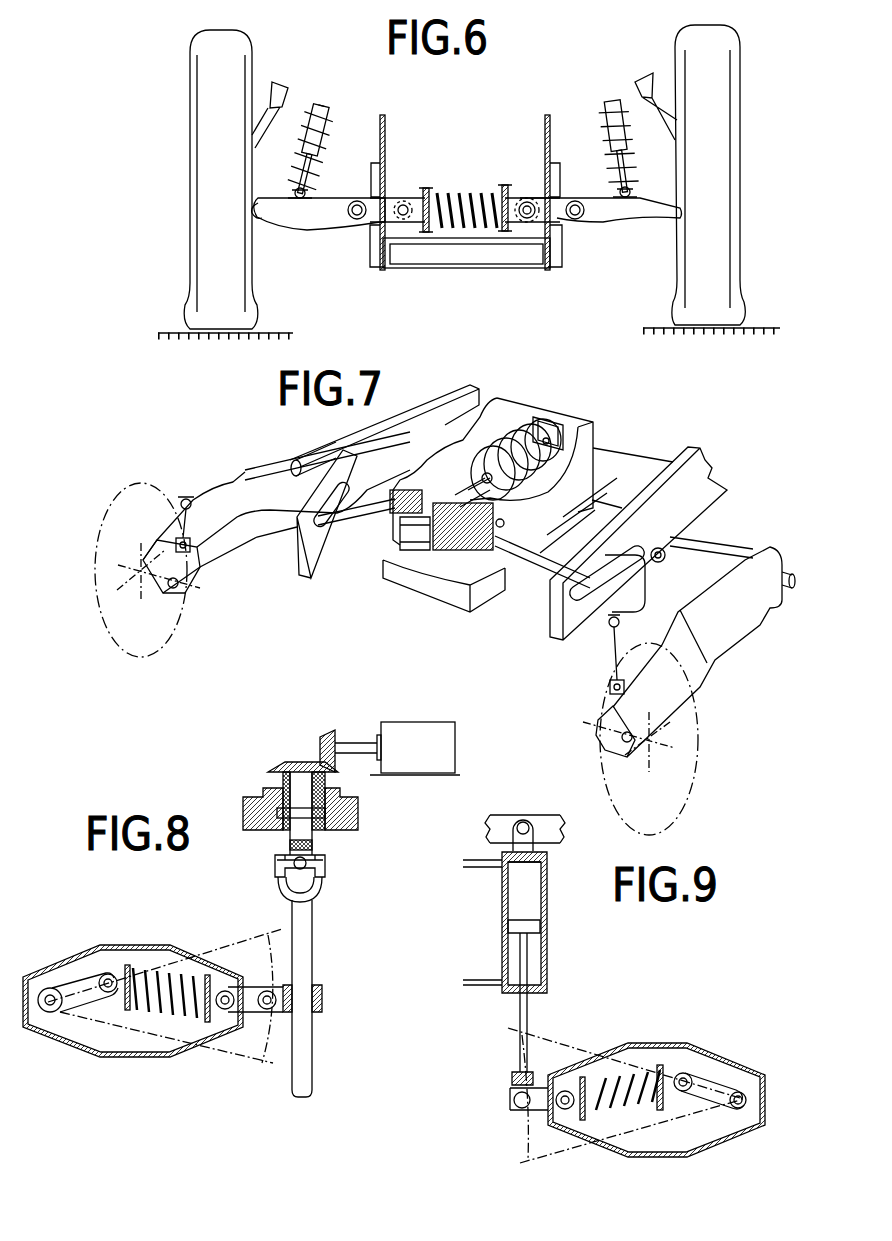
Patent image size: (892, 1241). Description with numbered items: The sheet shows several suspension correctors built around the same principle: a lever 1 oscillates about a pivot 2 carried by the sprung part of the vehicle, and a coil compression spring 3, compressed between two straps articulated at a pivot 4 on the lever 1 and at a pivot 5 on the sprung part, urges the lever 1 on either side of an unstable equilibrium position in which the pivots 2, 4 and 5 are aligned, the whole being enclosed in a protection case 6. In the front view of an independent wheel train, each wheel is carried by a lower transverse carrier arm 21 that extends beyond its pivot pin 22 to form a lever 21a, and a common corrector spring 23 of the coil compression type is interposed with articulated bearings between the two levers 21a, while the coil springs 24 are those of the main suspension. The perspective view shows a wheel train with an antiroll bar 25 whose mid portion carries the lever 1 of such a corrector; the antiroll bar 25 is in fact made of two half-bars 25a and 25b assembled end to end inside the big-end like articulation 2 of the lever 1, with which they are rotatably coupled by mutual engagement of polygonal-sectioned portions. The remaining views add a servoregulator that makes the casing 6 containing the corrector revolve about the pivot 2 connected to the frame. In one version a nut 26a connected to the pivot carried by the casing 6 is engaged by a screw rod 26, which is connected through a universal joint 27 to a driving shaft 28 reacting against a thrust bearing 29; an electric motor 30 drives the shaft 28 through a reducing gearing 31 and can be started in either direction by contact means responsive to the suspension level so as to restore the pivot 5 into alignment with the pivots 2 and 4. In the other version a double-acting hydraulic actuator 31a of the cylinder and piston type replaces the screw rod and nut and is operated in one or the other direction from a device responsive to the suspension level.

In FIG. 7, the lever 1 is at (450, 497).
In FIG. 8, the lever 1 is at (60, 1010).
In FIG. 9, the lever 1 is at (712, 1091).
In FIG. 7, the pivot 2 is at (505, 523).
In FIG. 8, the pivot 2 is at (50, 997).
In FIG. 9, the pivot 2 is at (739, 1108).
In FIG. 7, the coil compression spring 3 is at (513, 437).
In FIG. 7, the pivot 4 is at (470, 488).
In FIG. 8, the pivot 4 is at (110, 980).
In FIG. 9, the pivot 4 is at (687, 1077).
In FIG. 7, the pivot 5 is at (548, 444).
In FIG. 8, the pivot 5 is at (227, 995).
In FIG. 9, the pivot 5 is at (565, 1108).
In FIG. 7, the protection case 6 is at (585, 445).
In FIG. 8, the protection case 6 is at (180, 948).
In FIG. 9, the protection case 6 is at (656, 1100).
In FIG. 6, the lower transverse carrier arm 21 is at (317, 217).
In FIG. 6, the lever 21a is at (380, 197).
In FIG. 6, the pivot pin 22 is at (355, 218).
In FIG. 6, the common corrector spring 23 is at (460, 193).
In FIG. 6, the coil springs 24 is at (328, 133).
In FIG. 7, the antiroll bar 25 is at (261, 460).
In FIG. 7, the half-bar 25a is at (383, 510).
In FIG. 7, the half-bar 25b is at (538, 553).
In FIG. 8, the screw rod 26 is at (300, 955).
In FIG. 8, the nut 26a is at (323, 1005).
In FIG. 8, the universal joint 27 is at (315, 878).
In FIG. 8, the driving shaft 28 is at (305, 833).
In FIG. 8, the thrust bearing 29 is at (323, 825).
In FIG. 8, the electric motor 30 is at (425, 767).
In FIG. 8, the reducing bevel gearing 31 is at (289, 741).
In FIG. 9, the double-acting hydraulic actuator 31a is at (543, 942).